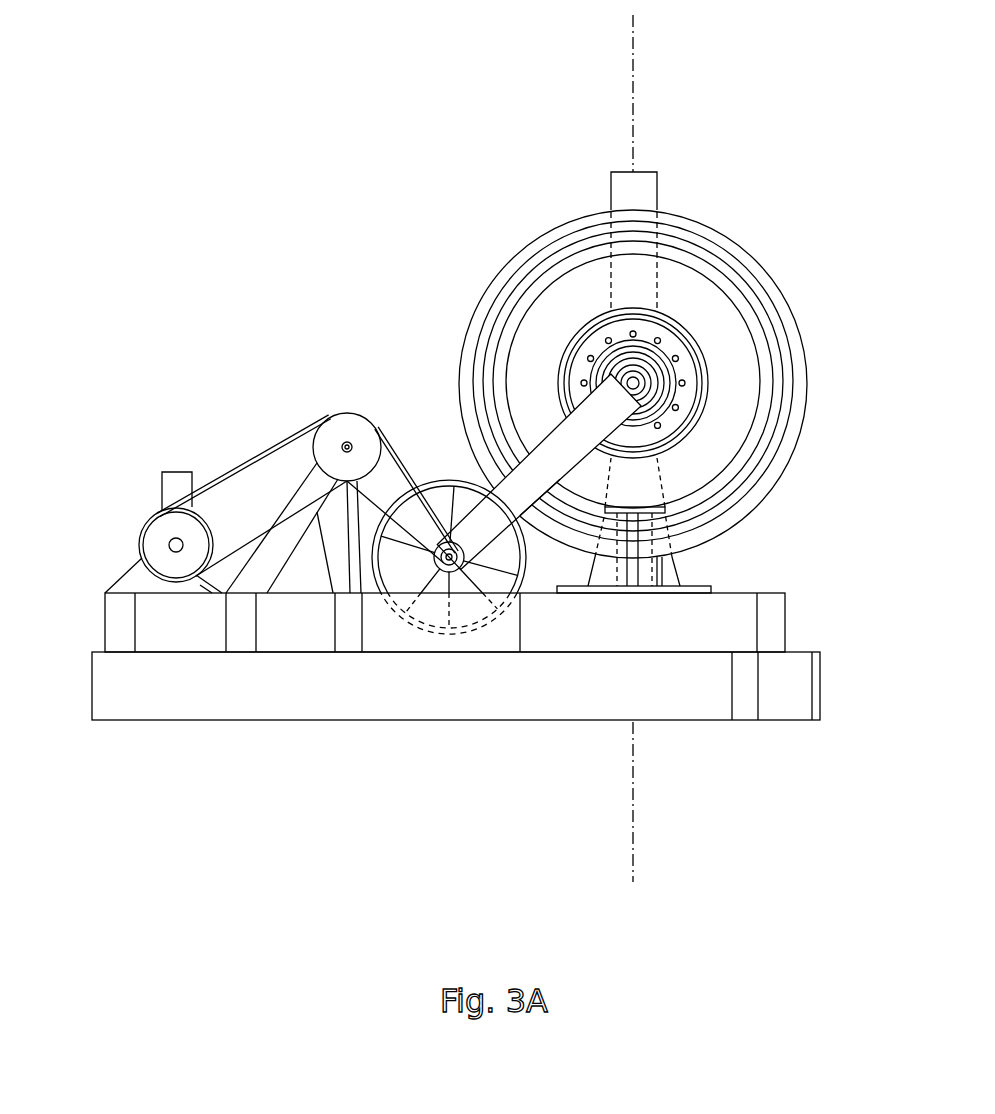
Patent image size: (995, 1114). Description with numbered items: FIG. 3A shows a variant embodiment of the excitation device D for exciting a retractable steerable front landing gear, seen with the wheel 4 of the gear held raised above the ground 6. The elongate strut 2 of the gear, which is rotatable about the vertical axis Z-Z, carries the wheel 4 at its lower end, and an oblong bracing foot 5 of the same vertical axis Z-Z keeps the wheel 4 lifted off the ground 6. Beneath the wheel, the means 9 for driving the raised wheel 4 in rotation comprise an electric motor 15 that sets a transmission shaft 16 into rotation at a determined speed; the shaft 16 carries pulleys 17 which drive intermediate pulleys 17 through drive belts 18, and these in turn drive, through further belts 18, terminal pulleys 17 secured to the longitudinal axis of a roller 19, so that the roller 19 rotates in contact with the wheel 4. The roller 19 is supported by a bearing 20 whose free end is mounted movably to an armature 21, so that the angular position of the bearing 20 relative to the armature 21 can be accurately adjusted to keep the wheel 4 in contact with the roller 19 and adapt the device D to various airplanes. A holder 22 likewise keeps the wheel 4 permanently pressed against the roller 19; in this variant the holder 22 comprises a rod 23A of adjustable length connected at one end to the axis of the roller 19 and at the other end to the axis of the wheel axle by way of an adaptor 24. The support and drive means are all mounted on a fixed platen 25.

The strut 2 is at (641, 189).
The wheel 4 is at (745, 297).
The bracing foot 5 is at (697, 564).
The ground 6 is at (655, 693).
The means for driving the wheels 9 is at (274, 433).
The electric motor 15 is at (138, 520).
The transmission shaft 16 is at (177, 552).
The pulley 17 is at (347, 447).
The drive belt 18 is at (398, 483).
The roller 19 is at (493, 563).
The bearing 20 is at (413, 485).
The armature 21 is at (262, 563).
The holder 22 is at (538, 530).
The rod 23A is at (490, 430).
The adaptor 24 is at (668, 375).
The fixed platen 25 is at (773, 619).
The excitation device D is at (249, 226).
The vertical axis Z is at (636, 66).